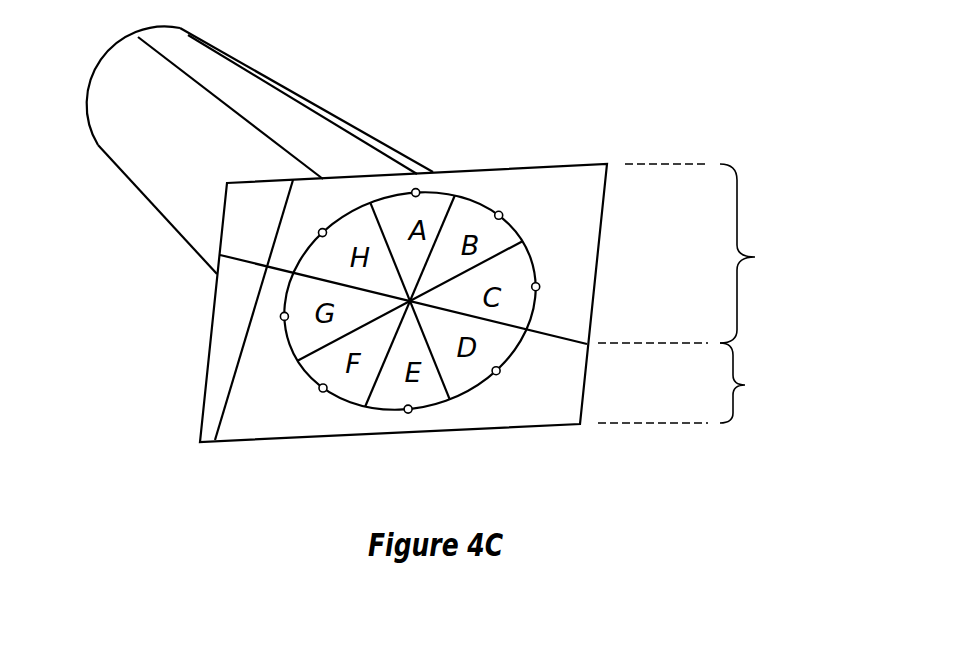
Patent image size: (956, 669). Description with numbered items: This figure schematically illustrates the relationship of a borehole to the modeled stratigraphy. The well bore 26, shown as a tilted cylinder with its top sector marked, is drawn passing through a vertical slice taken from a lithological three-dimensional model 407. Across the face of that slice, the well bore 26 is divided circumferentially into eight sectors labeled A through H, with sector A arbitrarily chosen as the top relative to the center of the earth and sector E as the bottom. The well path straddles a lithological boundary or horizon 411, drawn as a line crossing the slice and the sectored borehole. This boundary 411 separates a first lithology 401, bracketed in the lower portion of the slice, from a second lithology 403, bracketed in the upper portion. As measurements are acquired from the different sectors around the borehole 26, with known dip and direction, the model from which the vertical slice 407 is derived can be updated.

The well bore 26 is at (142, 207).
The lithological 3-D model 407 is at (522, 168).
The lithological boundary 411 is at (243, 258).
The second lithology 403 is at (700, 253).
The first lithology 401 is at (695, 383).